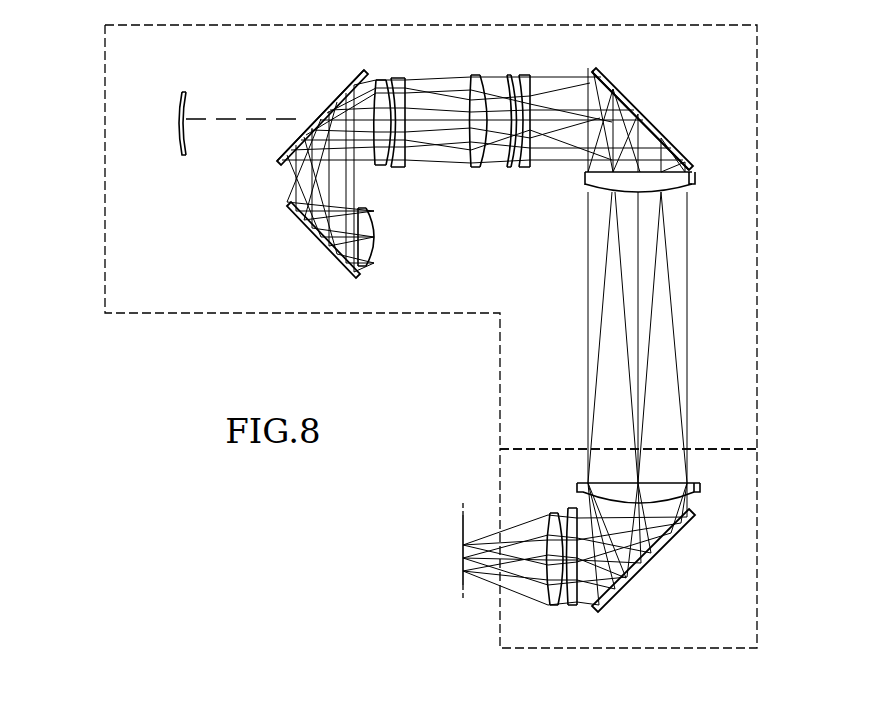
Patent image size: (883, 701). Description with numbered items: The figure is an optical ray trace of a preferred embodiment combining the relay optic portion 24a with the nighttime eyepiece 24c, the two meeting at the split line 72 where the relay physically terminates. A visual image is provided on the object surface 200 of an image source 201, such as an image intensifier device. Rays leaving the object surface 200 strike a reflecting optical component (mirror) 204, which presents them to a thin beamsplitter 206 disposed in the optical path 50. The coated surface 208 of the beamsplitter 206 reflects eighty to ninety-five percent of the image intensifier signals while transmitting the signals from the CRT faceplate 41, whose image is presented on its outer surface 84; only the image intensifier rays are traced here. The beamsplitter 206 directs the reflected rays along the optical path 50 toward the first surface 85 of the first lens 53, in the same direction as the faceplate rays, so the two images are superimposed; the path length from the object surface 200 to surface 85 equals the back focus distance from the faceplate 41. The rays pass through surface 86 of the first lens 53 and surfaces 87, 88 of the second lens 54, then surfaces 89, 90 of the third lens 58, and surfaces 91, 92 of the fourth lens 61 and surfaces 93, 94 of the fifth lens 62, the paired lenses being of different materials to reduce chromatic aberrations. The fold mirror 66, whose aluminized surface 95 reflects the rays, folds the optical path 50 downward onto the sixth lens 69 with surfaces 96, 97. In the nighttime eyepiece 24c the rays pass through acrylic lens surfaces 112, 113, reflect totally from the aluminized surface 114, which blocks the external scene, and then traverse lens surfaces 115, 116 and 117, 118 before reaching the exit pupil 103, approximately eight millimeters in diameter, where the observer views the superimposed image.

The relay optic portion 24a is at (774, 245).
The nighttime eyepiece 24c is at (767, 526).
The split line 72 is at (517, 447).
The CRT faceplate 41 is at (177, 110).
The outer surface 84 is at (183, 136).
The optical axis 50 is at (243, 118).
The beamsplitter 206 is at (280, 163).
The beamsplitter surface 208 is at (284, 173).
The reflecting optical component 204 is at (307, 228).
The object surface 200 is at (373, 227).
The image source 201 is at (376, 256).
The first surface 85 is at (379, 169).
The lens surface 86 is at (386, 90).
The lens surface 87 is at (404, 95).
The first lens 53 is at (397, 170).
The lens surface 88 is at (410, 104).
The second lens 54 is at (404, 163).
The third lens 58 is at (471, 169).
The lens surface 89 is at (470, 110).
The lens surface 90 is at (490, 141).
The fourth lens 61 is at (508, 170).
The lens surface 91 is at (505, 145).
The lens surface 92 is at (507, 106).
The fifth lens 62 is at (521, 170).
The lens surface 93 is at (529, 104).
The lens surface 94 is at (531, 158).
The fold mirror 66 is at (626, 102).
The fold mirror surface 95 is at (591, 85).
The lens surface 97 is at (671, 192).
The lens surface 96 is at (584, 173).
The sixth lens 69 is at (693, 174).
The eyepiece lens surface 112 is at (592, 483).
The eyepiece lens surface 113 is at (696, 494).
The aluminized reflective surface 114 is at (685, 529).
The eyepiece lens surface 116 is at (567, 512).
The eyepiece lens surface 115 is at (578, 503).
The eyepiece lens surface 118 is at (549, 602).
The eyepiece lens surface 117 is at (560, 604).
The exit pupil 103 is at (463, 513).